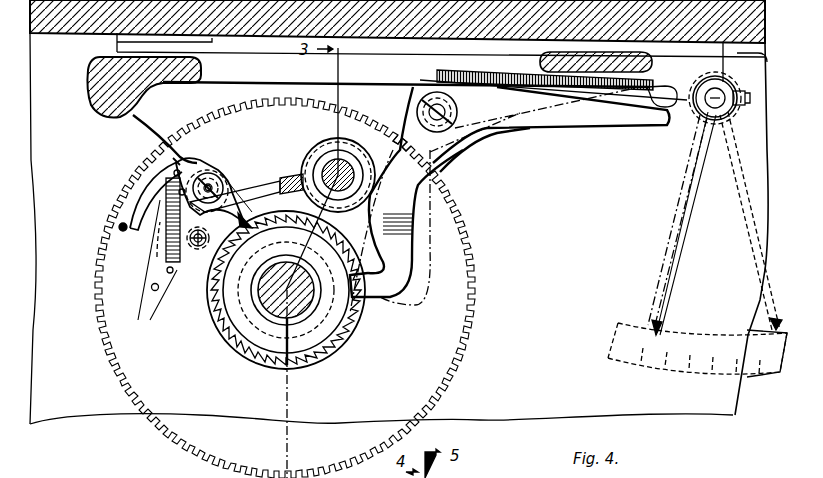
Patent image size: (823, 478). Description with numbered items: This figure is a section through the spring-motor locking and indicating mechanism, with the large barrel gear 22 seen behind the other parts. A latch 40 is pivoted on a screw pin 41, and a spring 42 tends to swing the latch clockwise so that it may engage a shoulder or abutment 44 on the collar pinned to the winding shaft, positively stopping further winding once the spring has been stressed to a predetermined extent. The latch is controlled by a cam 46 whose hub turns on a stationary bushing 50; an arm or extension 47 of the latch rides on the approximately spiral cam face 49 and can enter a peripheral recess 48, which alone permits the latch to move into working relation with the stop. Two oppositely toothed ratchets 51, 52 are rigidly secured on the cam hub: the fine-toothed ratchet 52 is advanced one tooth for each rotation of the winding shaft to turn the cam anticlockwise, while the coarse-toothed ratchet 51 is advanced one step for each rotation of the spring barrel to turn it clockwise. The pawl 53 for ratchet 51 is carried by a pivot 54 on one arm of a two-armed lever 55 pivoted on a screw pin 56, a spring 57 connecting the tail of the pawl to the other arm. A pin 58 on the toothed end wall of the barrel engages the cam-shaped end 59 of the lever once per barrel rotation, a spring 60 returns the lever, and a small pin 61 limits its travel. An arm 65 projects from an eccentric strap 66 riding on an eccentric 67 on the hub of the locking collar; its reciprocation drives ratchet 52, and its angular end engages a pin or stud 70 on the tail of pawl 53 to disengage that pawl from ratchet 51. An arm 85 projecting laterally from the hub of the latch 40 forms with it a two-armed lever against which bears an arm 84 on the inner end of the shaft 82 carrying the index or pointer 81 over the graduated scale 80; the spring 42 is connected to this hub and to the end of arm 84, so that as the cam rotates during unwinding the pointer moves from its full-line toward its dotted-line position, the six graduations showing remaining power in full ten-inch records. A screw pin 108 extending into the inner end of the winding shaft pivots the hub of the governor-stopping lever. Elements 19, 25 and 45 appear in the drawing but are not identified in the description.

The shaft 19 is at (305, 305).
The barrel gear 22 is at (167, 437).
The gear teeth 25 is at (392, 147).
The latch 40 is at (380, 176).
The screw pin 41 is at (434, 100).
The spring 42 is at (483, 84).
The shoulder or abutment 44 is at (398, 209).
The roller 45 is at (334, 146).
The cam 46 is at (212, 313).
The arm or extension 47 is at (390, 267).
The peripheral recess 48 is at (365, 305).
The cam face 49 is at (237, 357).
The stationary bushing 50 is at (305, 340).
The ratchet 51 is at (277, 363).
The ratchet 52 is at (323, 360).
The pawl 53 is at (245, 182).
The pivot 54 is at (195, 248).
The two-armed lever 55 is at (203, 163).
The screw pin 56 is at (214, 176).
The spring 57 is at (134, 224).
The pin 58 is at (121, 226).
The cam-shaped end 59 is at (150, 185).
The spring 60 is at (173, 158).
The small pin 61 is at (205, 163).
The arm 65 is at (267, 189).
The eccentric strap 66 is at (313, 152).
The eccentric 67 is at (352, 200).
The pin or stud 70 is at (151, 286).
The graduated scale 80 is at (753, 365).
The index or pointer 81 is at (760, 300).
The shaft 82 is at (733, 90).
The arm 84 is at (672, 112).
The arm 85 is at (573, 117).
The screw pin 108 is at (305, 178).